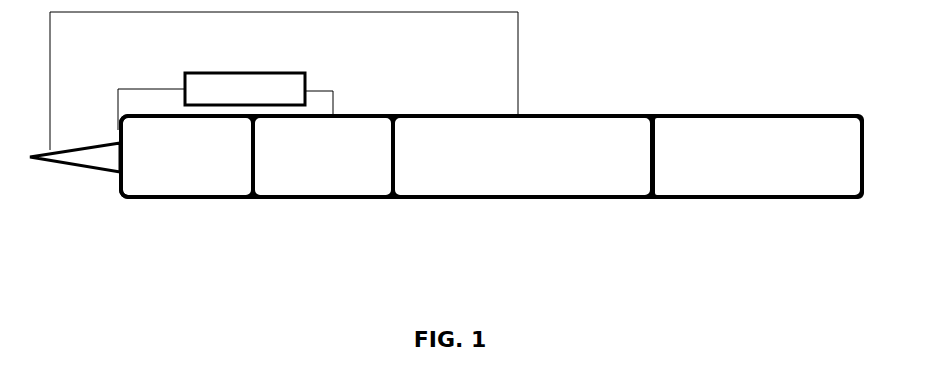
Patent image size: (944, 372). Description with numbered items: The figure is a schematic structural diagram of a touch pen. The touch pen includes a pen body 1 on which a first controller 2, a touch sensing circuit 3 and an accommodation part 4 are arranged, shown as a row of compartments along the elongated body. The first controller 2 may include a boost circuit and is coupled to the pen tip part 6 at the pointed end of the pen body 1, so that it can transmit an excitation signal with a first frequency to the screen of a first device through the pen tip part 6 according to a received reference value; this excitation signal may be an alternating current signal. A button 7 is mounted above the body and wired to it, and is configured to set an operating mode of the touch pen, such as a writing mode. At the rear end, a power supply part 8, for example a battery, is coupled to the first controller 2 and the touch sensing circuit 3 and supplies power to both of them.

The pen body 1 is at (553, 200).
The first controller 2 is at (480, 182).
The touch sensing circuit 3 is at (313, 177).
The accommodation part 4 is at (172, 173).
The pen tip part 6 is at (88, 158).
The button 7 is at (265, 72).
The power supply part 8 is at (745, 180).